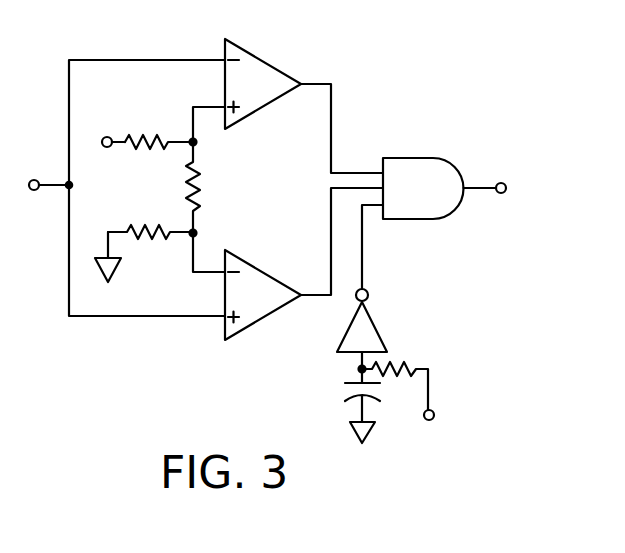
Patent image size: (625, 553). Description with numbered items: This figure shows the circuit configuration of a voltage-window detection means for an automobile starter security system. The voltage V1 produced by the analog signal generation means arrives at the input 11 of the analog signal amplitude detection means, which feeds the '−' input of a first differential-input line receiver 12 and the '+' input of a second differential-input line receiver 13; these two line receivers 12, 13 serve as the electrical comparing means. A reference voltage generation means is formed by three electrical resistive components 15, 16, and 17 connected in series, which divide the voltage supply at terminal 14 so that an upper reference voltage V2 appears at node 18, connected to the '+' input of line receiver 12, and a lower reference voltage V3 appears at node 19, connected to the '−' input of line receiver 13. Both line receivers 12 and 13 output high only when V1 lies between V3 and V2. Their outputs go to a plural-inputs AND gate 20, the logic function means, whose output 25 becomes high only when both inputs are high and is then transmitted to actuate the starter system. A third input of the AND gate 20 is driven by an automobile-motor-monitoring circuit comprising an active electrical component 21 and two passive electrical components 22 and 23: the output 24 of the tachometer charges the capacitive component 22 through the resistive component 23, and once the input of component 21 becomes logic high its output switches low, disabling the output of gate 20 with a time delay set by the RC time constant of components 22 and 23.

The input of the analog signal amplitude detection means 11 is at (30, 190).
The differential-input line receiver 12 is at (258, 55).
The differential-input line receiver 13 is at (262, 320).
The voltage supply 14 is at (105, 136).
The electrical resistive component 15 is at (141, 138).
The electrical resistive component 16 is at (197, 197).
The electrical resistive component 17 is at (142, 227).
The node 18 is at (193, 142).
The node 19 is at (193, 233).
The plural-inputs AND gate 20 is at (430, 157).
The active electrical component 21 is at (374, 312).
The passive electrical component 22 is at (352, 381).
The passive electrical component 23 is at (398, 367).
The output of the tachometer 24 is at (433, 420).
The output of the AND gate 25 is at (500, 194).